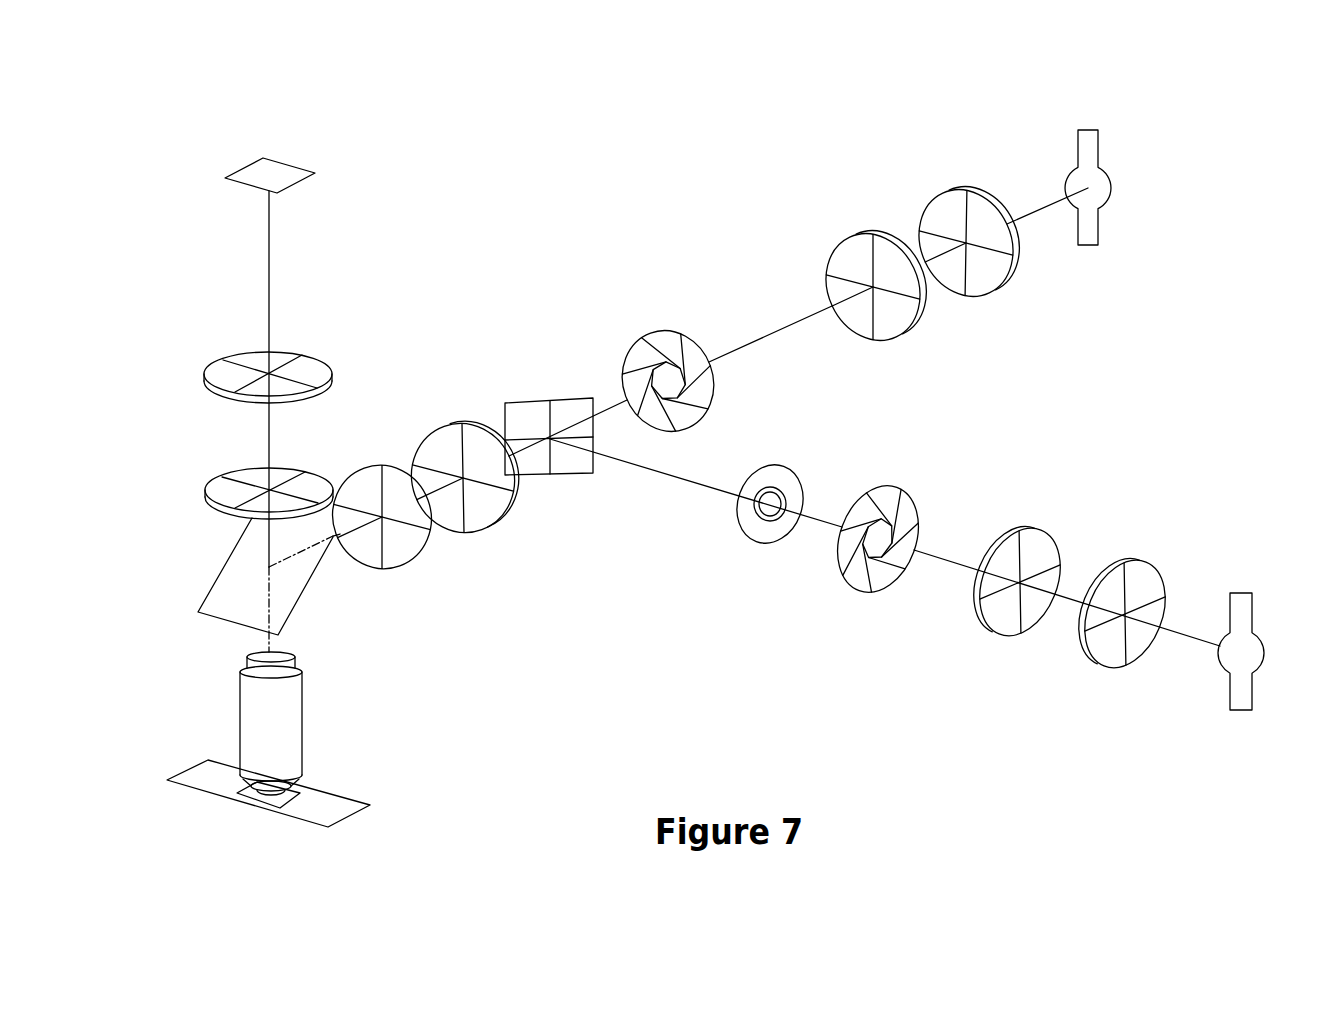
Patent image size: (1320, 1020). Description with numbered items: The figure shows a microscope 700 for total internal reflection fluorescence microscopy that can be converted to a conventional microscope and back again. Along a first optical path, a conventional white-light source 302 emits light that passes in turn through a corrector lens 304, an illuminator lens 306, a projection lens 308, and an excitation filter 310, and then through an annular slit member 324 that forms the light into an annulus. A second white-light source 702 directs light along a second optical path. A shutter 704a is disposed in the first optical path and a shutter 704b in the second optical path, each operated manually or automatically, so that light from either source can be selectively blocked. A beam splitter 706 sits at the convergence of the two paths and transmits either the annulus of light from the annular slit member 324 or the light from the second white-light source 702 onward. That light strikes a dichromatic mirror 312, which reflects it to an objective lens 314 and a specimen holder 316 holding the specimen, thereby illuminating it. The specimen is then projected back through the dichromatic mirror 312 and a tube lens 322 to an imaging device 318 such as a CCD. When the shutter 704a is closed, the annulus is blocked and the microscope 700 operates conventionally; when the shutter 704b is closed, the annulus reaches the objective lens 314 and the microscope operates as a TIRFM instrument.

The microscope 700 is at (186, 159).
The conventional light source 302 is at (1240, 593).
The corrector lens 304 is at (933, 207).
The illuminator lens 306 is at (837, 255).
The projection lens 308 is at (495, 515).
The excitation filter 310 is at (218, 482).
The dichromatic mirror 312 is at (297, 588).
The objective lens 314 is at (293, 722).
The specimen holder 316 is at (335, 805).
The imaging device 318 is at (285, 172).
The tube lens 322 is at (218, 368).
The annular slit member 324 is at (793, 470).
The second white-light source 702 is at (1078, 138).
The shutter 704a is at (920, 482).
The shutter 704b is at (640, 333).
The beam splitter 706 is at (530, 402).